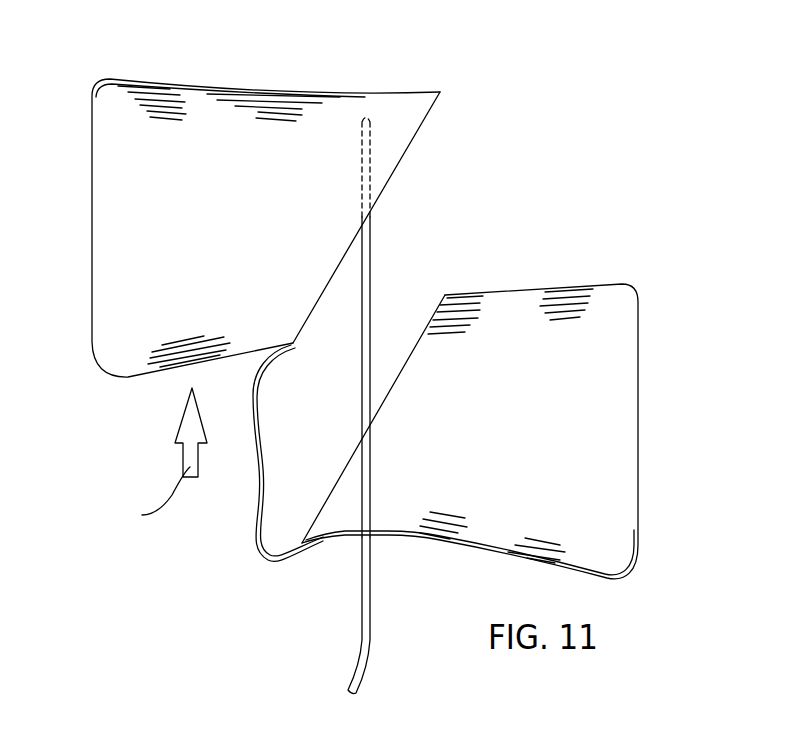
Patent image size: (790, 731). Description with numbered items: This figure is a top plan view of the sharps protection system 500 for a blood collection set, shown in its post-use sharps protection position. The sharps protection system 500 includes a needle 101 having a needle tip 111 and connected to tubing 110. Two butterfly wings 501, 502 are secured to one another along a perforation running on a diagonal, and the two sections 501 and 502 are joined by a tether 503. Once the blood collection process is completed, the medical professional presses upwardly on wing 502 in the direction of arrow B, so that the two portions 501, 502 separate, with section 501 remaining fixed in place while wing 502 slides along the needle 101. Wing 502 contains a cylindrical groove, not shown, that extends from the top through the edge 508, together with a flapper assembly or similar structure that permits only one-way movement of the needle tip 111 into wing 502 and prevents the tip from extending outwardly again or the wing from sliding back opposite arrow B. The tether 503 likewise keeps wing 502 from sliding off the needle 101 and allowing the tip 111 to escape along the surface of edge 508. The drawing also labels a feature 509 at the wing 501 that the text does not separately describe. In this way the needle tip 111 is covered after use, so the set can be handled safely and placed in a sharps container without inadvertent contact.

The sharps protection system 500 is at (664, 425).
The butterfly wing 501 is at (603, 332).
The butterfly wing 502 is at (103, 353).
The tether 503 is at (258, 497).
The edge 508 is at (410, 148).
The second flap edge 509 is at (440, 303).
The needle 101 is at (372, 270).
The tubing 110 is at (372, 595).
The needle tip 111 is at (364, 119).